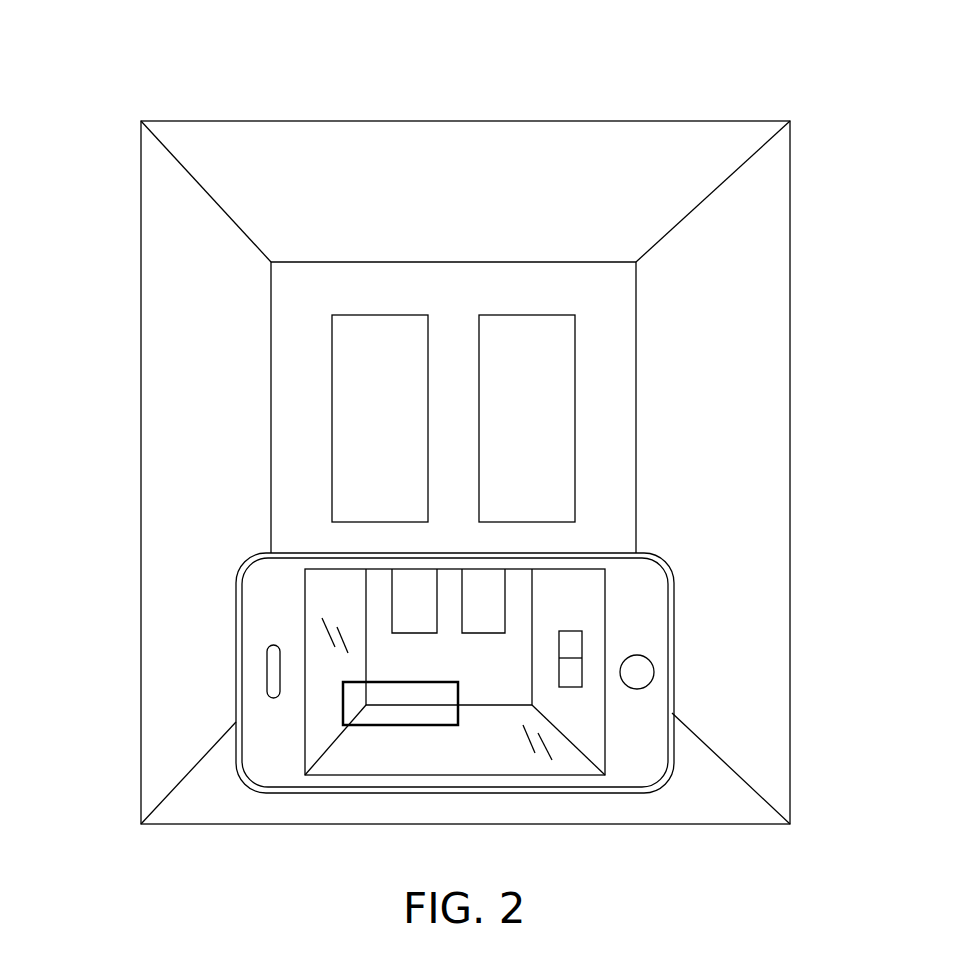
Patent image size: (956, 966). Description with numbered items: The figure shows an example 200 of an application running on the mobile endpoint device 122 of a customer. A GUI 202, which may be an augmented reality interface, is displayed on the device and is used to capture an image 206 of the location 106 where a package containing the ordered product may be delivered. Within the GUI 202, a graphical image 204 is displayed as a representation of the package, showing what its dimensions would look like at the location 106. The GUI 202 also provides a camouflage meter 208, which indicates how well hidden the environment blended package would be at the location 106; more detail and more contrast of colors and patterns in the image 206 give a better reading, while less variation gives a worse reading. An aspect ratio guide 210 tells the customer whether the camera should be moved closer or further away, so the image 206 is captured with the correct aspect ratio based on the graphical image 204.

The example 200 is at (503, 71).
The location 106 is at (177, 352).
The mobile endpoint device 122 is at (660, 560).
The GUI 202 is at (572, 762).
The graphical image 204 is at (462, 694).
The image 206 is at (335, 582).
The camouflage meter 208 is at (562, 603).
The aspect ratio guide 210 is at (475, 753).